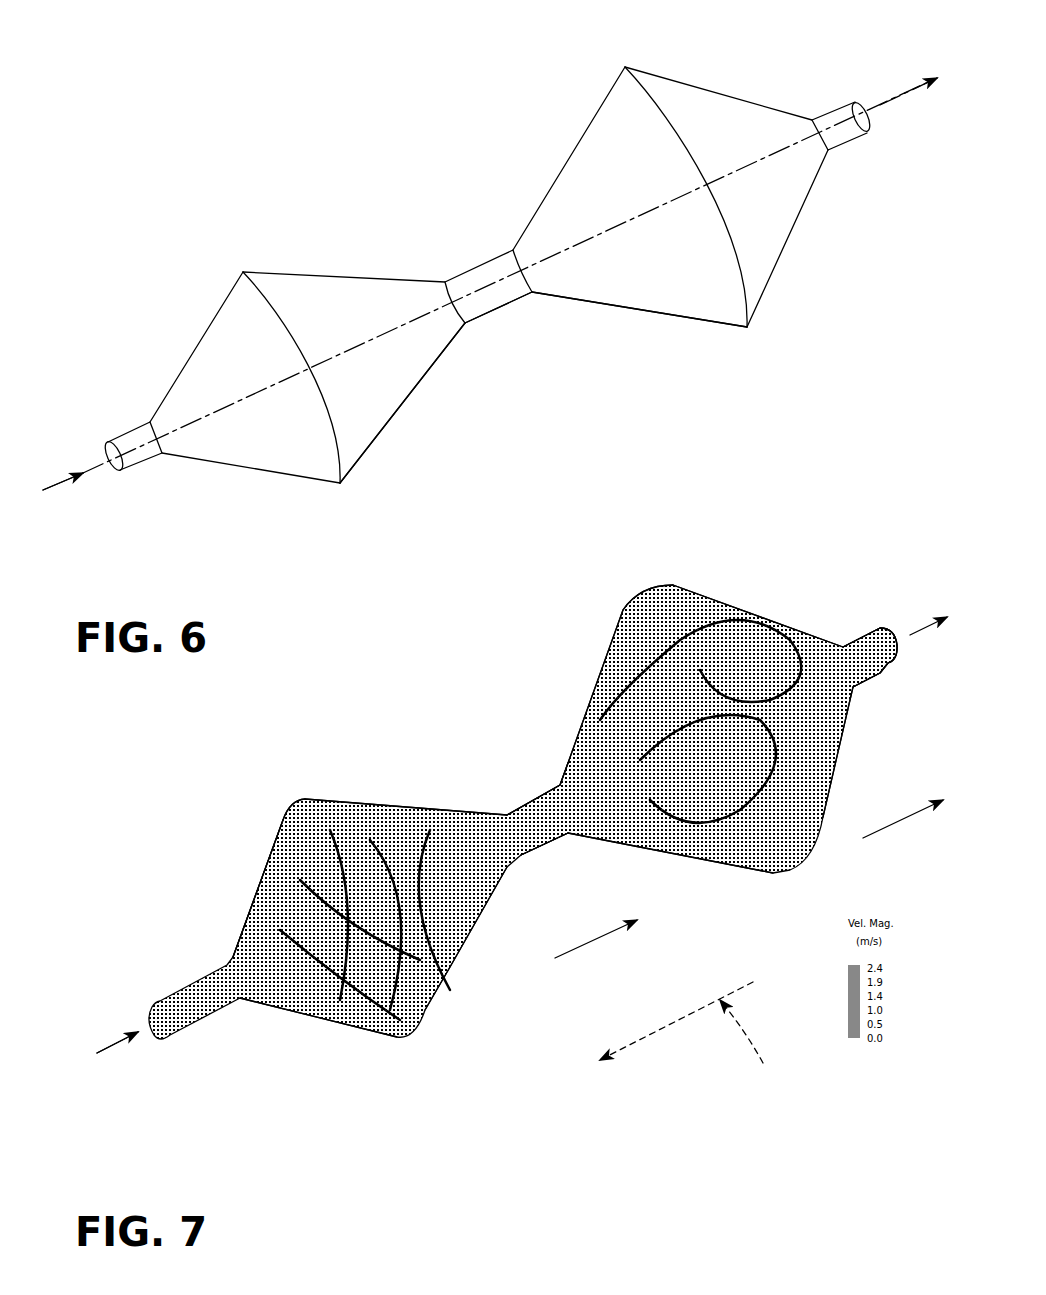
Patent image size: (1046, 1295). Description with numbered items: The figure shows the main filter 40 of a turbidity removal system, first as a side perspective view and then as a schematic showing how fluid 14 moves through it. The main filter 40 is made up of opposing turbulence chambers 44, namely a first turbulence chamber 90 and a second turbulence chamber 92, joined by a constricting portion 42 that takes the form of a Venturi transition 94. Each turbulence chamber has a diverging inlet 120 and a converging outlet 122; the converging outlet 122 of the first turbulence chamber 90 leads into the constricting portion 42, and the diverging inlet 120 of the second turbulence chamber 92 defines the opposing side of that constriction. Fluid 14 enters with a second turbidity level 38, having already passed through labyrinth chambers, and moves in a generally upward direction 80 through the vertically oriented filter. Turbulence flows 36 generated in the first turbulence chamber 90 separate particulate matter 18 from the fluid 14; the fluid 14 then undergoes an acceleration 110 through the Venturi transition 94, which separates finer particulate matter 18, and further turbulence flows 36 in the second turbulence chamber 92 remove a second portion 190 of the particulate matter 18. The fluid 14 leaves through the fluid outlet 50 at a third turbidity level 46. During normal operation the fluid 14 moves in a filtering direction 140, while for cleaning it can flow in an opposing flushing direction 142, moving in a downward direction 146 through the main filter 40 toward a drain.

In FIG. 6, the fluid 14 is at (60, 470).
In FIG. 7, the fluid 14 is at (113, 1028).
In FIG. 7, the particulate matter 18 is at (317, 1003).
In FIG. 7, the turbulence flows 36 is at (423, 987).
In FIG. 6, the second turbidity level 38 is at (55, 490).
In FIG. 7, the second turbidity level 38 is at (115, 1043).
In FIG. 6, the main filter 40 is at (403, 185).
In FIG. 7, the main filter 40 is at (415, 725).
In FIG. 6, the constricting portion 42 is at (490, 325).
In FIG. 7, the constricting portion 42 is at (556, 856).
In FIG. 6, the opposing turbulence chambers 44 is at (220, 310).
In FIG. 7, the opposing turbulence chambers 44 is at (277, 820).
In FIG. 6, the third turbidity level 46 is at (910, 87).
In FIG. 7, the third turbidity level 46 is at (928, 623).
In FIG. 6, the fluid outlet 50 is at (868, 127).
In FIG. 7, the fluid outlet 50 is at (900, 657).
In FIG. 7, the upward direction 80 is at (590, 945).
In FIG. 6, the first turbulence chamber 90 is at (368, 275).
In FIG. 7, the first turbulence chamber 90 is at (372, 800).
In FIG. 6, the second turbulence chamber 92 is at (573, 150).
In FIG. 7, the second turbulence chamber 92 is at (697, 588).
In FIG. 6, the Venturi transition 94 is at (473, 267).
In FIG. 7, the Venturi transition 94 is at (570, 837).
In FIG. 7, the acceleration 110 is at (517, 815).
In FIG. 6, the diverging inlet 120 is at (155, 410).
In FIG. 7, the diverging inlet 120 is at (240, 920).
In FIG. 6, the converging outlet 122 is at (418, 390).
In FIG. 7, the converging outlet 122 is at (490, 927).
In FIG. 7, the filtering direction 140 is at (907, 820).
In FIG. 7, the flushing direction 142 is at (670, 1025).
In FIG. 7, the downward direction 146 is at (755, 1048).
In FIG. 7, the second portion of the particulate matter 190 is at (263, 873).